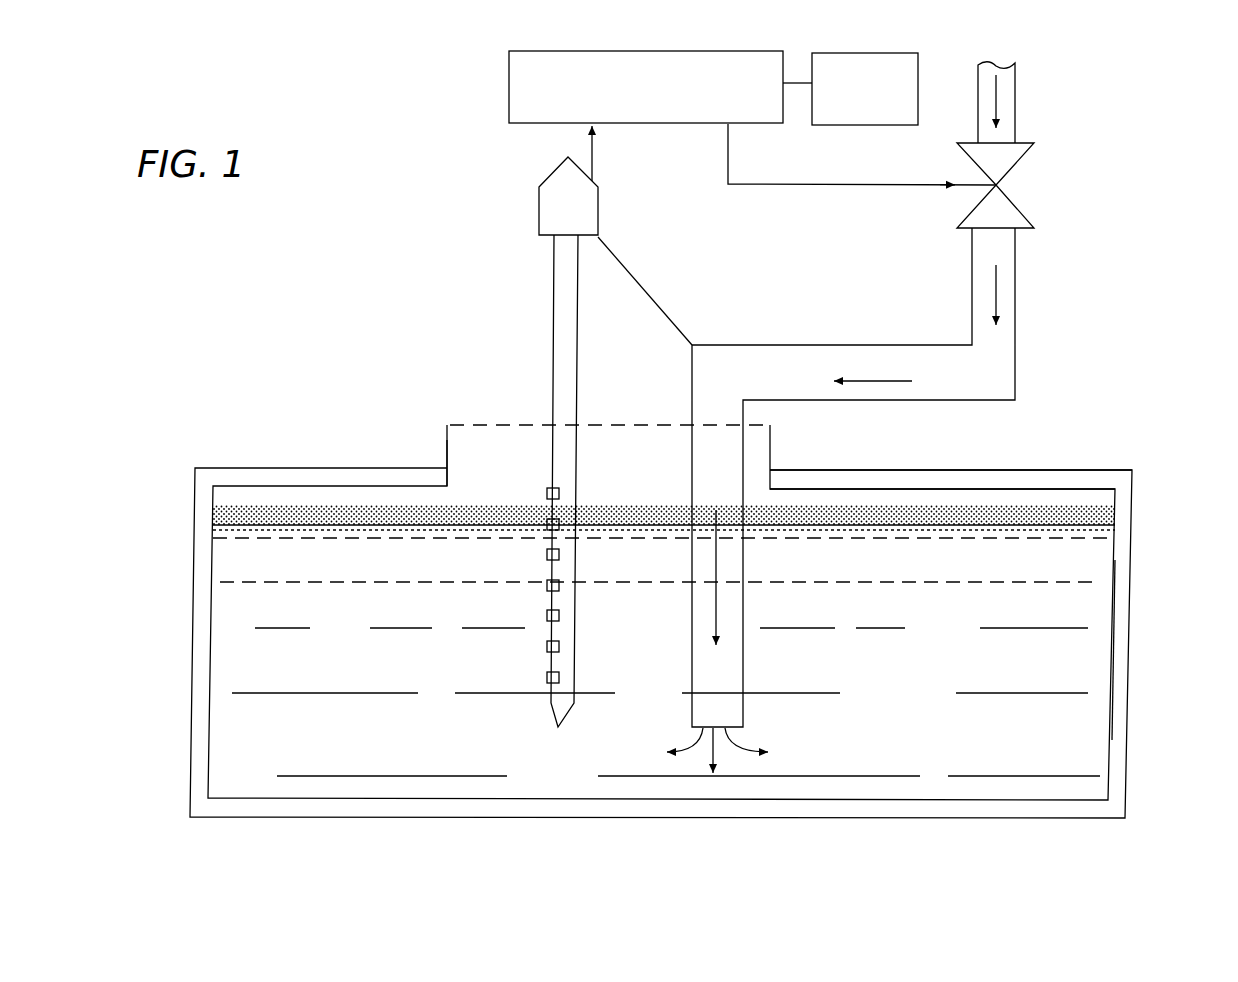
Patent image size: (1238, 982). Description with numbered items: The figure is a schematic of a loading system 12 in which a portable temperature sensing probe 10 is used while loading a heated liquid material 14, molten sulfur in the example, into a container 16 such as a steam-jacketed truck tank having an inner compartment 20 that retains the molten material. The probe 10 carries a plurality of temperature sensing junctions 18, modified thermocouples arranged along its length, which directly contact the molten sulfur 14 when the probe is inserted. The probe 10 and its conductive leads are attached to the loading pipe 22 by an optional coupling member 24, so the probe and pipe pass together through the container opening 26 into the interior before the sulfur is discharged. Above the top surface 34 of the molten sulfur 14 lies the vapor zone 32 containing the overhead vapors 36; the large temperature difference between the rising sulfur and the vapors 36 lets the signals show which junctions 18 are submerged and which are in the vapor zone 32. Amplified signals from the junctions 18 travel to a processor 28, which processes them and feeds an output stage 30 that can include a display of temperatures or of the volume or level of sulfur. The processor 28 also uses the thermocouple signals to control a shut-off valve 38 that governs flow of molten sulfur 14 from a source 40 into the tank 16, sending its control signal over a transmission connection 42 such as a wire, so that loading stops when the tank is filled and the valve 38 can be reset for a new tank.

The temperature sensing probe 10 is at (554, 312).
The loading system 12 is at (252, 392).
The heated liquid material 14 is at (322, 641).
The container 16 is at (1134, 537).
The temperature sensing junctions 18 is at (547, 615).
The inner compartment 20 is at (1113, 678).
The loading pipe 22 is at (1016, 365).
The coupling member 24 is at (648, 276).
The container opening 26 is at (456, 421).
The processor 28 is at (509, 88).
The output stage 30 is at (868, 125).
The vapor zone 32 is at (462, 472).
The top surface 34 is at (951, 460).
The vapors 36 is at (240, 503).
The shut-off valve 38 is at (1028, 162).
The source 40 is at (1016, 102).
The transmission connection 42 is at (796, 187).